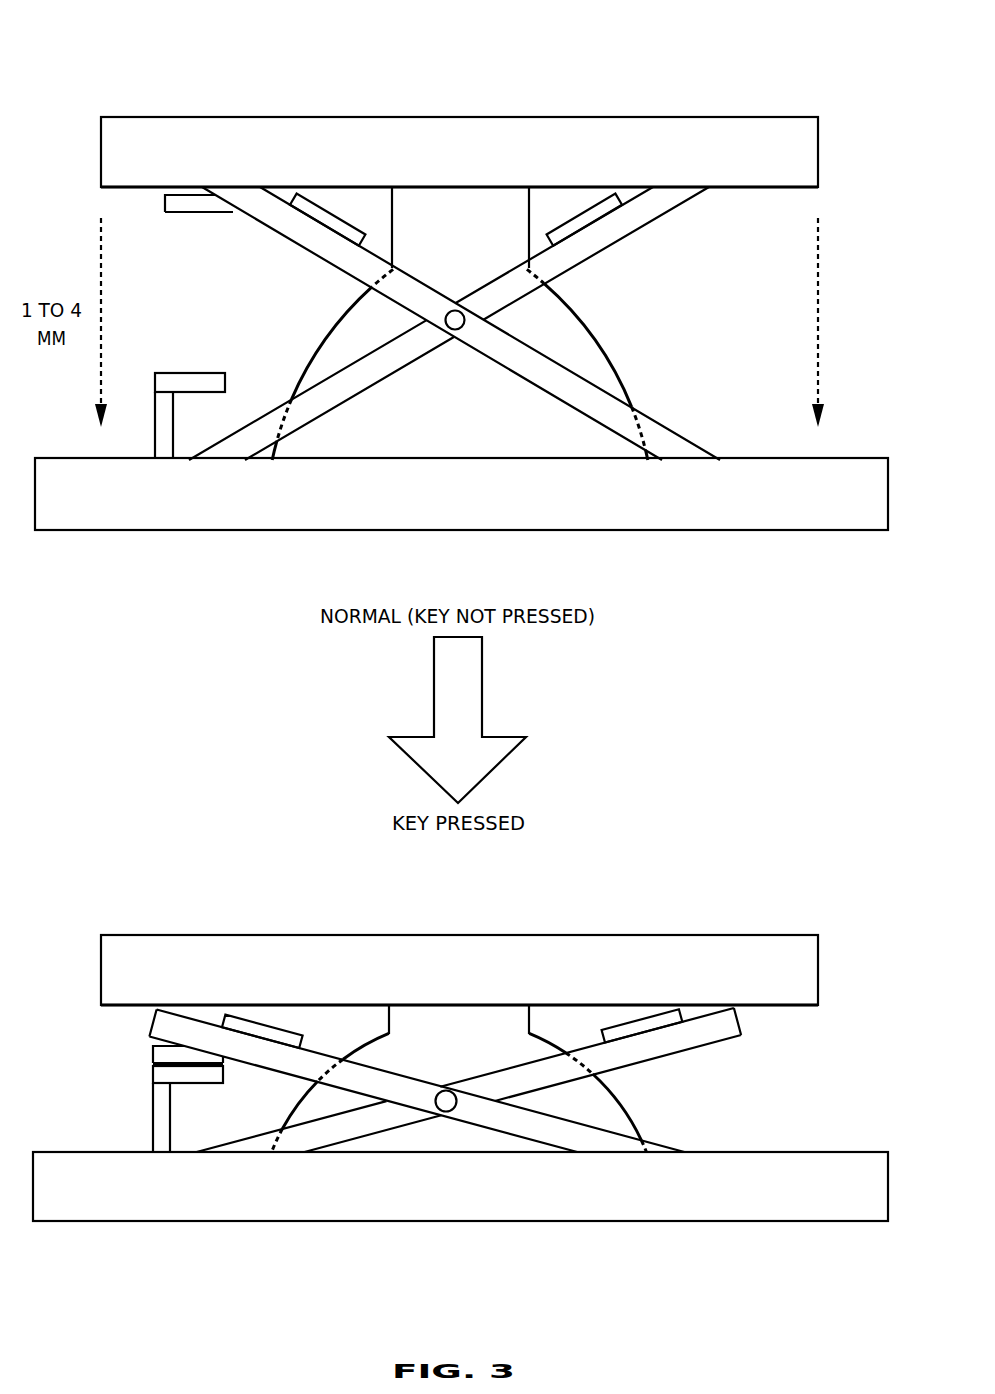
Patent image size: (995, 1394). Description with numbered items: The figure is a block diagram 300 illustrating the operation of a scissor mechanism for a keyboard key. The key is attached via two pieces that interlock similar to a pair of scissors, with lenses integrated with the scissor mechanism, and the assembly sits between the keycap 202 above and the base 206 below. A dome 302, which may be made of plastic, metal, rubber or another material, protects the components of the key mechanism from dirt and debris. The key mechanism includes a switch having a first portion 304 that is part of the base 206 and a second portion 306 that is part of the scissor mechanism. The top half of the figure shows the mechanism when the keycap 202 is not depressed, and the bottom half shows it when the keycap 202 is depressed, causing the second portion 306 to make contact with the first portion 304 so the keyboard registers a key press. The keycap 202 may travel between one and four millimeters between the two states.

The block diagram 300 is at (92, 36).
The keycap 202 is at (478, 164).
The base 206 is at (478, 507).
The dome 302 is at (594, 338).
The first portion of the switch 304 is at (217, 373).
The second portion of the switch 306 is at (208, 213).